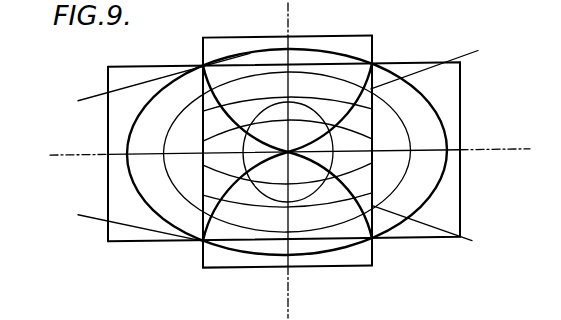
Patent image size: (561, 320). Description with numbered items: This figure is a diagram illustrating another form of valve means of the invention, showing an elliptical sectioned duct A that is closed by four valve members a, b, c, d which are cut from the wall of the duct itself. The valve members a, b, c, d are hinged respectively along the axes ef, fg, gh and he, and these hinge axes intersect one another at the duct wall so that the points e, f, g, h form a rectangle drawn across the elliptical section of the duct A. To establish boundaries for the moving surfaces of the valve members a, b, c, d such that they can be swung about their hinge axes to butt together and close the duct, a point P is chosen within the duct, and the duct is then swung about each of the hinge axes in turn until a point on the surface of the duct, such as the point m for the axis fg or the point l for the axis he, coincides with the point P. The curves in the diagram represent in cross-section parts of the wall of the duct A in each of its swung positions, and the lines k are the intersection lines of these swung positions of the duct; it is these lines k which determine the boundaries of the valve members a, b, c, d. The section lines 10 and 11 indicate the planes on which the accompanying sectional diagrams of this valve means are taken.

The elliptical sectioned duct A is at (437, 110).
The valve member a is at (290, 44).
The valve member b is at (375, 152).
The valve member c is at (288, 253).
The valve member d is at (164, 160).
The hinge axis end point e is at (203, 64).
The hinge axis end point f is at (373, 64).
The hinge axis end point g is at (373, 240).
The hinge axis end point h is at (203, 240).
The intersection lines k is at (73, 112).
The point on duct surface l is at (118, 161).
The point on duct surface m is at (461, 177).
The chosen point P is at (288, 151).
The section line 10 is at (312, 9).
The section line 11 is at (80, 170).